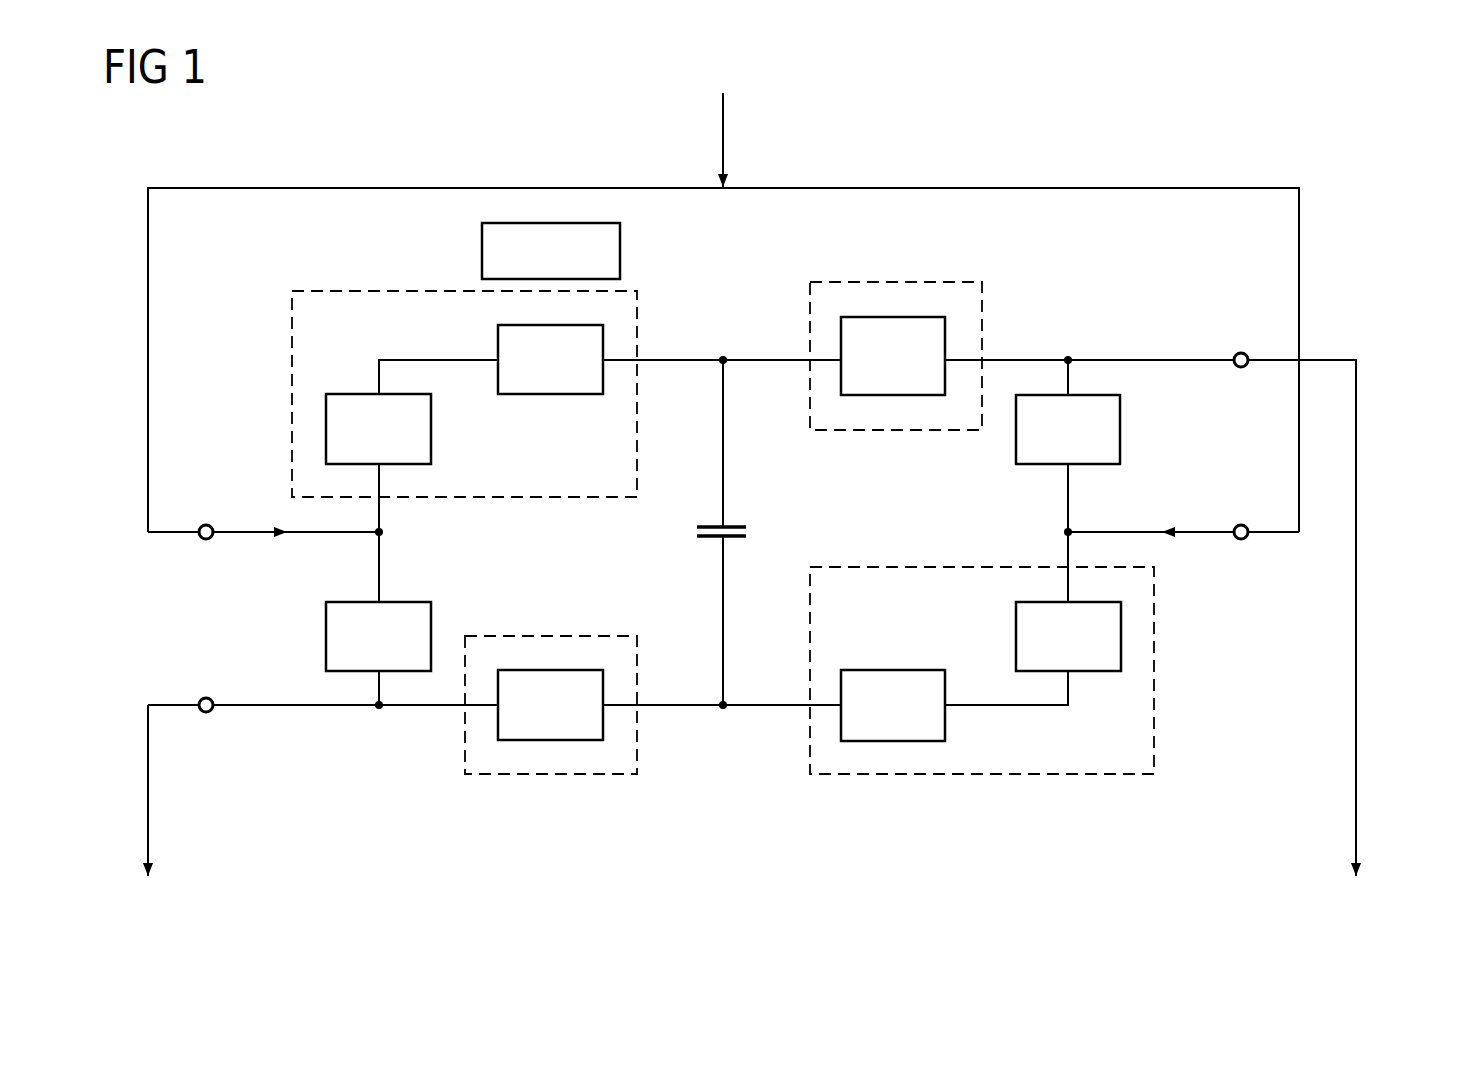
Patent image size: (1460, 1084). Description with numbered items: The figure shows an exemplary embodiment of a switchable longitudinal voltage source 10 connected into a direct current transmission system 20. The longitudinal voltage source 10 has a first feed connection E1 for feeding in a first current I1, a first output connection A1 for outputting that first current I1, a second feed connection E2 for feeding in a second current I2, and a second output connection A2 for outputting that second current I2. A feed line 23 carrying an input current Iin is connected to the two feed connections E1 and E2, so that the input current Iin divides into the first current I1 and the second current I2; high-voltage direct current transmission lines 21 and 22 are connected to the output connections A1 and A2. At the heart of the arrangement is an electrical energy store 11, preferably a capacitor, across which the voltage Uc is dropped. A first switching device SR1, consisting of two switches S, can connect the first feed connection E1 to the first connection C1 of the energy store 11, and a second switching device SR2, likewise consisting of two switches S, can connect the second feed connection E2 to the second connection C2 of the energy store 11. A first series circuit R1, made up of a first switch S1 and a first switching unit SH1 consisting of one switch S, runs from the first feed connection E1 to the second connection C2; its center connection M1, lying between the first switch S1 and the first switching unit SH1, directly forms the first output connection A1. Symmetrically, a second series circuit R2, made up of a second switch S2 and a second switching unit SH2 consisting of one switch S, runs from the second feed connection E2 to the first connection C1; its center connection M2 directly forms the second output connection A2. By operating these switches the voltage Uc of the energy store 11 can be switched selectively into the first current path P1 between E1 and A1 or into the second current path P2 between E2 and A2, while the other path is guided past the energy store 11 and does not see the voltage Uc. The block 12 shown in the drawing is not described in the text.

The switchable longitudinal voltage source 10 is at (1352, 289).
The electrical energy store 11 is at (746, 532).
The control device 12 is at (620, 251).
The direct current transmission system 20 is at (774, 822).
The high-voltage direct current transmission line 21 is at (148, 736).
The high-voltage direct current transmission line 22 is at (1356, 737).
The feed line 23 is at (549, 187).
The first switching device SR1 is at (372, 291).
The second switching device SR2 is at (975, 774).
The first switching unit SH1 is at (548, 774).
The second switching unit SH2 is at (892, 282).
The switch S is at (498, 338).
The first switch S1 is at (326, 635).
The second switch S2 is at (1120, 430).
The first series circuit R1 is at (409, 752).
The second series circuit R2 is at (1126, 320).
The first current path P1 is at (203, 600).
The second current path P2 is at (1190, 462).
The first feed connection E1 is at (186, 514).
The second feed connection E2 is at (1263, 552).
The first output connection A1 is at (323, 723).
The second output connection A2 is at (1245, 343).
The center connection of the first series circuit M1 is at (379, 710).
The center connection of the second series circuit M2 is at (1069, 356).
The first connection of the energy store C1 is at (723, 356).
The second connection of the energy store C2 is at (723, 710).
The input current Iin is at (745, 140).
The first current I1 is at (270, 703).
The second current I2 is at (1232, 684).
The voltage of the energy store Uc is at (689, 499).